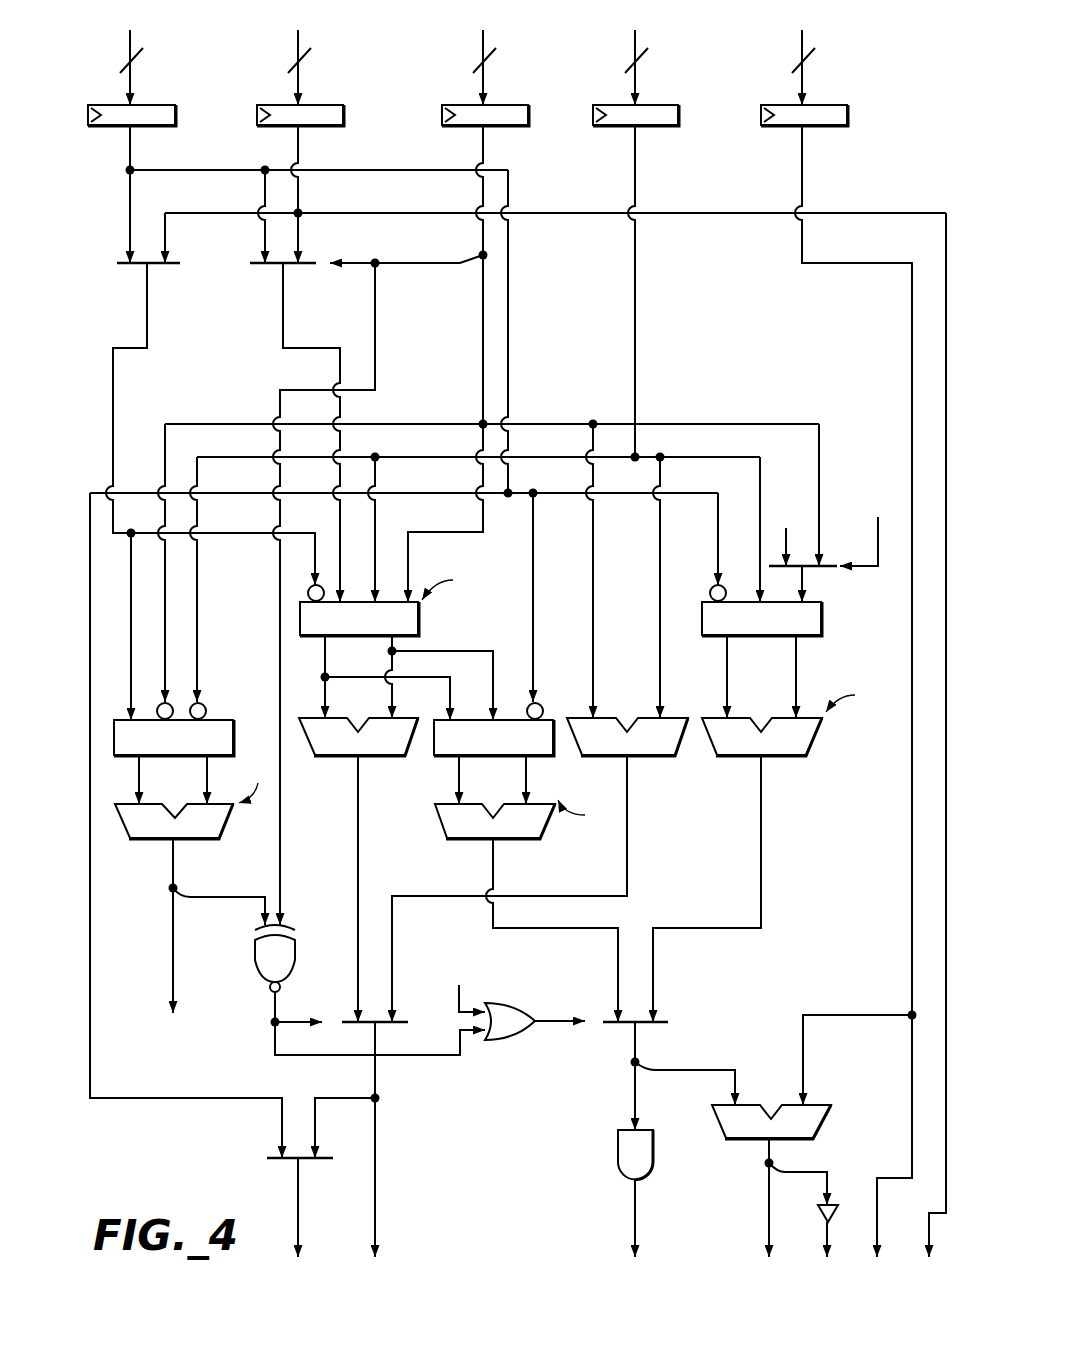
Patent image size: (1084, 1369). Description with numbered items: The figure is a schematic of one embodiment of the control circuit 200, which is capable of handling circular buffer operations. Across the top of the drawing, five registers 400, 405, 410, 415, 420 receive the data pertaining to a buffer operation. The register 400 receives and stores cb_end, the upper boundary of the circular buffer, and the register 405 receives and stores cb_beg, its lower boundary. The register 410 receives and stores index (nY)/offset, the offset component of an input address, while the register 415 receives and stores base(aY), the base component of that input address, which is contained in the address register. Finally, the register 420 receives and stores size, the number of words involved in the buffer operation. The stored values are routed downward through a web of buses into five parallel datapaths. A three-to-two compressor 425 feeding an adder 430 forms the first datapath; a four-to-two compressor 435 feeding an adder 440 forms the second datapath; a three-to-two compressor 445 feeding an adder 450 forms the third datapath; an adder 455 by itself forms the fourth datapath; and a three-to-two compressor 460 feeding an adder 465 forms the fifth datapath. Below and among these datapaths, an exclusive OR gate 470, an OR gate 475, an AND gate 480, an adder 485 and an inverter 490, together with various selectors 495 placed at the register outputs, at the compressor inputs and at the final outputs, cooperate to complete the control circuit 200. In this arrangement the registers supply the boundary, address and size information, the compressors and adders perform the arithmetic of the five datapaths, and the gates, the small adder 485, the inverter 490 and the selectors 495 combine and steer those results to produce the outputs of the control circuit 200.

The control circuit 200 is at (183, 1122).
The register 400 is at (150, 103).
The register 405 is at (318, 103).
The register 410 is at (500, 103).
The register 415 is at (650, 103).
The register 420 is at (822, 103).
The 3:2 compressor 425 is at (215, 718).
The adder 430 is at (160, 840).
The 4:2 compressor 435 is at (420, 631).
The adder 440 is at (353, 760).
The 3:2 compressor 445 is at (450, 757).
The adder 450 is at (460, 840).
The adder 455 is at (598, 757).
The 3:2 compressor 460 is at (822, 615).
The adder 465 is at (750, 757).
The exclusive OR gate 470 is at (253, 950).
The OR gate 475 is at (510, 1043).
The AND gate 480 is at (617, 1138).
The adder 485 is at (815, 1102).
The inverter 490 is at (845, 1198).
The selectors 495 is at (158, 270).